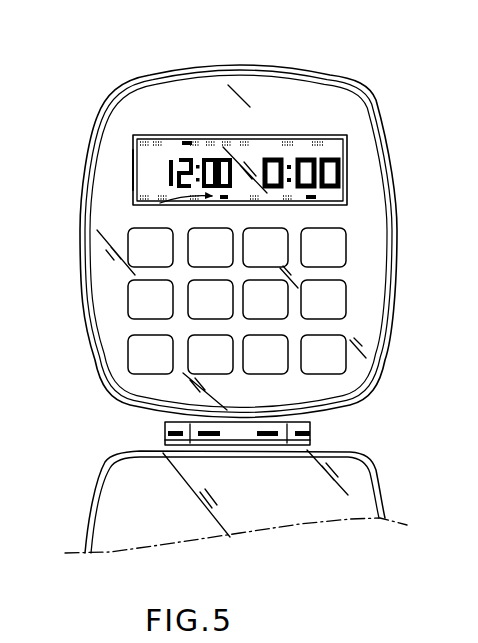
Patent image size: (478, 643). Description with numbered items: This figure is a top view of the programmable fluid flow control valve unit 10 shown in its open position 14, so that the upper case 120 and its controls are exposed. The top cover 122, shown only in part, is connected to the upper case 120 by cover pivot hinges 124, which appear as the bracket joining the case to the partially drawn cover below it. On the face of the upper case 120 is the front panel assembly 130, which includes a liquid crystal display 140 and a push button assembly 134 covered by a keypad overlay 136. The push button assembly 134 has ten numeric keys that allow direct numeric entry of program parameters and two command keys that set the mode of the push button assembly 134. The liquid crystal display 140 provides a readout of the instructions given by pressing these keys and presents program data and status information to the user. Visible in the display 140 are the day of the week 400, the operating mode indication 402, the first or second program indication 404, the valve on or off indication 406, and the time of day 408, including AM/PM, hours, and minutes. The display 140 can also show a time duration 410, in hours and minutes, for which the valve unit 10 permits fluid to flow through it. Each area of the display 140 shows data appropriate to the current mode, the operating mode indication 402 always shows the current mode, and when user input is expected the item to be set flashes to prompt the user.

The programmable fluid flow control valve unit 10 is at (378, 84).
The open position 14 is at (82, 76).
The upper case 120 is at (148, 80).
The front panel assembly 130 is at (258, 98).
The day of the week 400 is at (143, 140).
The liquid crystal display 140 is at (147, 154).
The time of day 408 is at (127, 173).
The operating mode indication 402 is at (132, 204).
The first or second program indication 404 is at (330, 144).
The time duration 410 is at (340, 164).
The valve on or off indication 406 is at (330, 194).
The keypad overlay 136 is at (189, 301).
The push button assembly 134 is at (137, 297).
The cover pivot hinges 124 is at (165, 426).
The top cover 122 is at (142, 468).